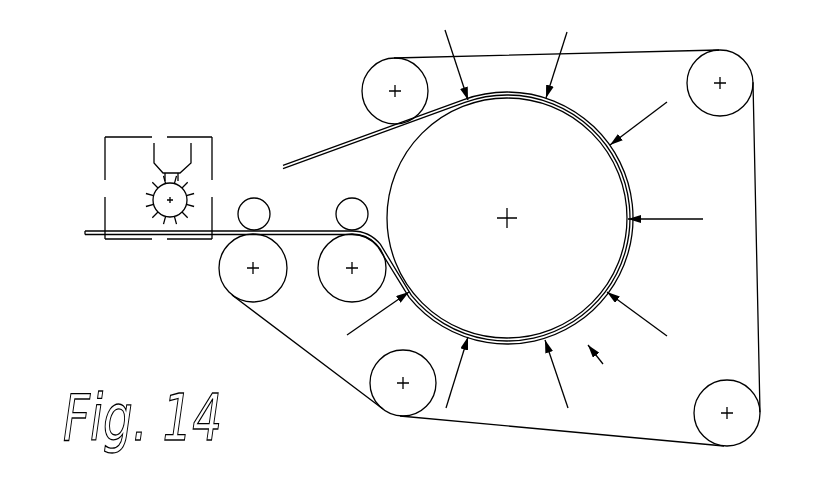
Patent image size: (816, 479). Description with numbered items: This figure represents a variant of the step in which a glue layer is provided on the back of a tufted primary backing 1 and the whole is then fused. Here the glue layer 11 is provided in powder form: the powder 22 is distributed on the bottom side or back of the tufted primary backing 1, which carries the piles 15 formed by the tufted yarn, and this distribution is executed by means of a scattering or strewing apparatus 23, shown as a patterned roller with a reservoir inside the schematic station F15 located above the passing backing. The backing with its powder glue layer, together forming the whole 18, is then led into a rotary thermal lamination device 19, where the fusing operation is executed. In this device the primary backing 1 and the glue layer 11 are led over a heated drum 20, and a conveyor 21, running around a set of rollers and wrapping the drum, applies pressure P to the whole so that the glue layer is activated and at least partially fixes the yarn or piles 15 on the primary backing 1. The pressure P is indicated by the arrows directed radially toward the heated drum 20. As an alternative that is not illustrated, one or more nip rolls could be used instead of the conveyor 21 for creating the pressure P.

The primary backing 1 is at (88, 230).
The piles 15 is at (97, 243).
The application station F15 is at (133, 136).
The glue layer 11 is at (202, 230).
The scattering or strewing apparatus 23 is at (135, 195).
The powder 22 is at (282, 230).
The whole 18 is at (312, 237).
The conveyor 21 is at (490, 56).
The heated drum 20 is at (582, 222).
The rotary thermal lamination device 19 is at (603, 364).
The pressure P is at (640, 120).